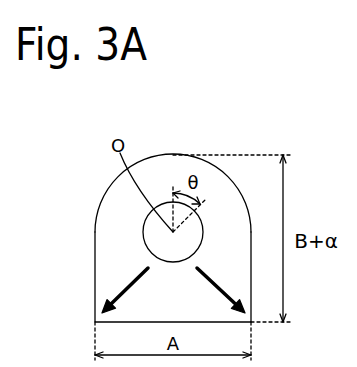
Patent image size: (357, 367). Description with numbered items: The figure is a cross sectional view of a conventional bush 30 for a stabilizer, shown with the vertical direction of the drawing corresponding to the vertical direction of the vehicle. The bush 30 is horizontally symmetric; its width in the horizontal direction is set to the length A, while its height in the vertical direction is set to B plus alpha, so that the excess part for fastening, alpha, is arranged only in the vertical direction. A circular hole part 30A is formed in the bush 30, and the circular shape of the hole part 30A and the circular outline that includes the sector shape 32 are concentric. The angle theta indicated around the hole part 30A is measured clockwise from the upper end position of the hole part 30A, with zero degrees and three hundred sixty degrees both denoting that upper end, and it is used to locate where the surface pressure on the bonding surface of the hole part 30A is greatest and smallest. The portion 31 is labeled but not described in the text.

The bush 30 is at (160, 212).
The hole part 30A is at (158, 240).
The straight portion 31 is at (117, 288).
The sector shape 32 is at (118, 207).